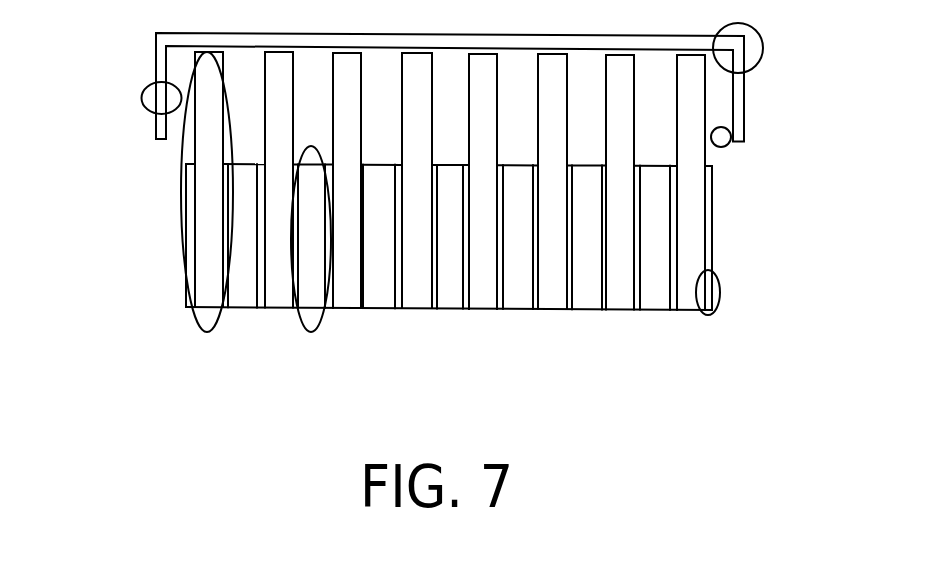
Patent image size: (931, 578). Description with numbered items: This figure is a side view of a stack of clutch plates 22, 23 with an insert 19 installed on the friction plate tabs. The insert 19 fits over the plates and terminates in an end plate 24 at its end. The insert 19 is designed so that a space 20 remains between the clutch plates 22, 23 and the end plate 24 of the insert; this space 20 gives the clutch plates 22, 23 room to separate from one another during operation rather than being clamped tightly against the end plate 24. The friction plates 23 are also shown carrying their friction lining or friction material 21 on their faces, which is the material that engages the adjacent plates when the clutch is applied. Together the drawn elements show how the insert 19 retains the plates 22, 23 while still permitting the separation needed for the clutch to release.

The insert 19 is at (763, 47).
The space 20 is at (731, 142).
The friction material 21 is at (707, 315).
The clutch plate 22 is at (310, 332).
The friction plate 23 is at (207, 332).
The end plate 24 is at (141, 98).